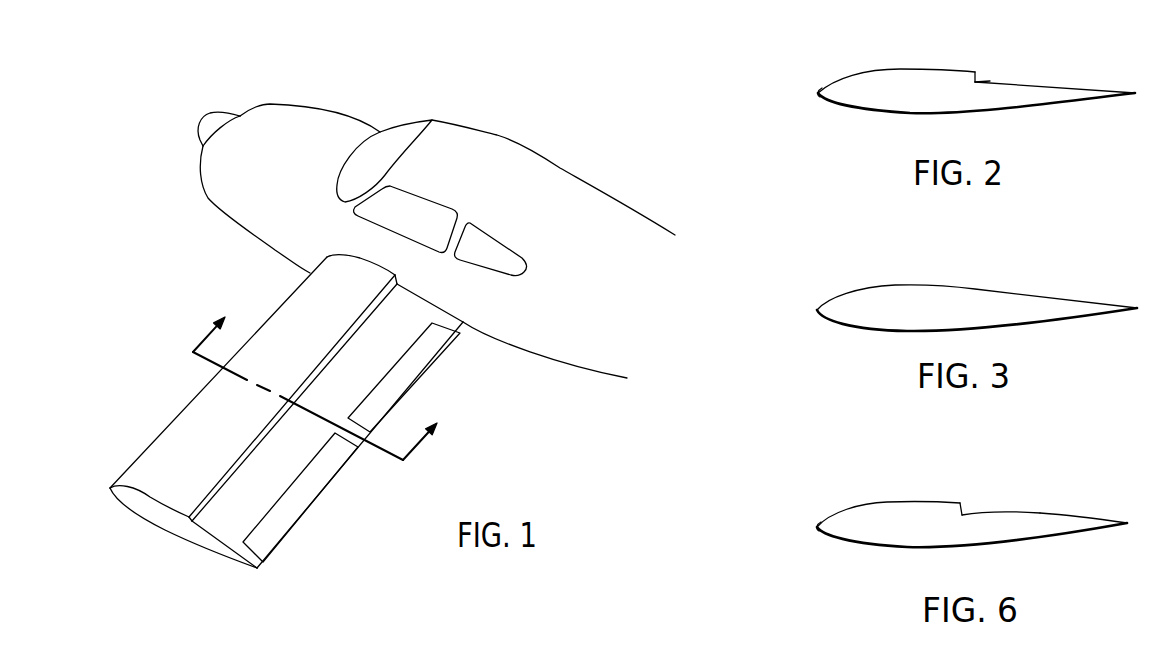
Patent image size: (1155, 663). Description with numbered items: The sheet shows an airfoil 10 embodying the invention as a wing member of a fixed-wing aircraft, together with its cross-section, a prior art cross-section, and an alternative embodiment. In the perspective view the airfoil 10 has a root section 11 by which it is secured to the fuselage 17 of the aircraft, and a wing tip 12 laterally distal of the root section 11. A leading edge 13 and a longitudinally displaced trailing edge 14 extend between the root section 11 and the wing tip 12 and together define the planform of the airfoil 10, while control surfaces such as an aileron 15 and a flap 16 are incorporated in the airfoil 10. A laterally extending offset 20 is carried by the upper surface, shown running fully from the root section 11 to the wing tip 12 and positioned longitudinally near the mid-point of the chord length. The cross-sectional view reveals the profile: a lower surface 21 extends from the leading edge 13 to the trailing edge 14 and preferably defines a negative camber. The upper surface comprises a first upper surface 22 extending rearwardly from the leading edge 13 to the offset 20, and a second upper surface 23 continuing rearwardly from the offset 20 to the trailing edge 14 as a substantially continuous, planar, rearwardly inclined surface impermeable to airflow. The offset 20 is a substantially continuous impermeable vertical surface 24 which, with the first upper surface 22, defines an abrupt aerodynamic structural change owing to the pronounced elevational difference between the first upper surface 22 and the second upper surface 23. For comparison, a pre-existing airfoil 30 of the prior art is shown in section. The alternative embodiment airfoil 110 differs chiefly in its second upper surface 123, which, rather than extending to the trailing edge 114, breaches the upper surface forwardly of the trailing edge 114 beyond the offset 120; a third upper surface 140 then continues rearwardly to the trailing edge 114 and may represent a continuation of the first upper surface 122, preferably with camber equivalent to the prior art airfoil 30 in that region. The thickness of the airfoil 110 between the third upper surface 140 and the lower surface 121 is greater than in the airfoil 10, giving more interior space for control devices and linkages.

In FIG. 1, the airfoil 10 is at (274, 435).
In FIG. 2, the airfoil 10 is at (949, 87).
In FIG. 1, the root section 11 is at (327, 278).
In FIG. 1, the wing tip 12 is at (160, 517).
In FIG. 1, the leading edge 13 is at (138, 457).
In FIG. 2, the leading edge 13 is at (818, 92).
In FIG. 6, the leading edge 13 is at (817, 527).
In FIG. 1, the trailing edge 14 is at (362, 447).
In FIG. 2, the trailing edge 14 is at (1135, 97).
In FIG. 1, the aileron 15 is at (322, 480).
In FIG. 1, the flap 16 is at (428, 355).
In FIG. 1, the fuselage 17 is at (518, 305).
In FIG. 1, the lateral offset 20 is at (203, 513).
In FIG. 2, the lateral offset 20 is at (975, 72).
In FIG. 2, the lower surface 21 is at (852, 112).
In FIG. 2, the first upper surface 22 is at (893, 70).
In FIG. 2, the second upper surface 23 is at (1067, 85).
In FIG. 2, the vertical surface 24 is at (978, 80).
In FIG. 3, the pre-existing airfoil 30 is at (1005, 275).
In FIG. 6, the alternative embodiment airfoil 110 is at (954, 518).
In FIG. 6, the trailing edge 114 is at (1128, 525).
In FIG. 6, the lateral offset 120 is at (960, 502).
In FIG. 6, the lower surface 121 is at (853, 542).
In FIG. 6, the first upper surface 122 is at (895, 500).
In FIG. 6, the second upper surface 123 is at (1003, 512).
In FIG. 6, the third upper surface 140 is at (1087, 512).